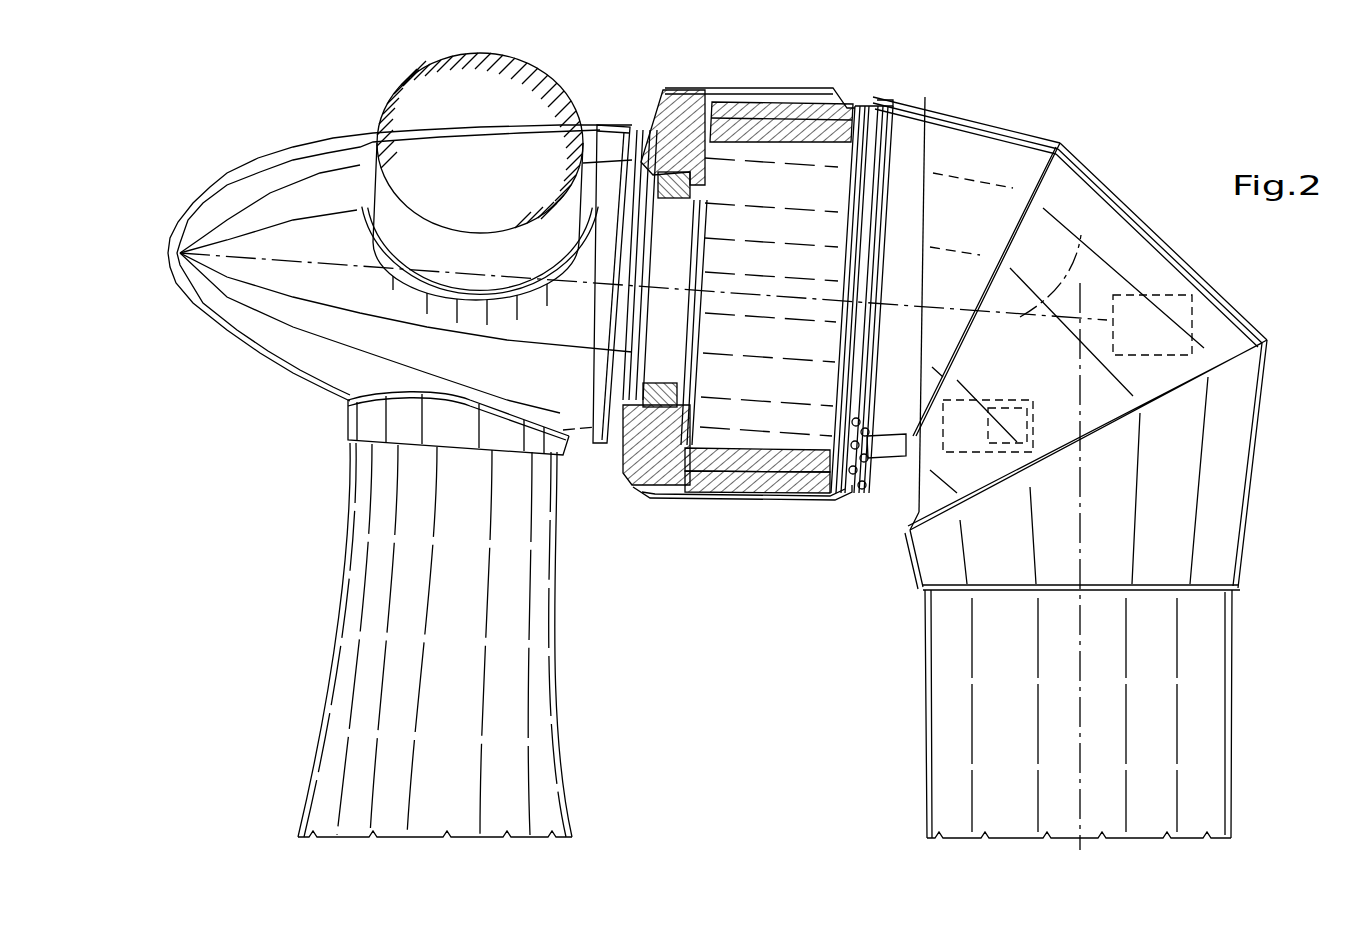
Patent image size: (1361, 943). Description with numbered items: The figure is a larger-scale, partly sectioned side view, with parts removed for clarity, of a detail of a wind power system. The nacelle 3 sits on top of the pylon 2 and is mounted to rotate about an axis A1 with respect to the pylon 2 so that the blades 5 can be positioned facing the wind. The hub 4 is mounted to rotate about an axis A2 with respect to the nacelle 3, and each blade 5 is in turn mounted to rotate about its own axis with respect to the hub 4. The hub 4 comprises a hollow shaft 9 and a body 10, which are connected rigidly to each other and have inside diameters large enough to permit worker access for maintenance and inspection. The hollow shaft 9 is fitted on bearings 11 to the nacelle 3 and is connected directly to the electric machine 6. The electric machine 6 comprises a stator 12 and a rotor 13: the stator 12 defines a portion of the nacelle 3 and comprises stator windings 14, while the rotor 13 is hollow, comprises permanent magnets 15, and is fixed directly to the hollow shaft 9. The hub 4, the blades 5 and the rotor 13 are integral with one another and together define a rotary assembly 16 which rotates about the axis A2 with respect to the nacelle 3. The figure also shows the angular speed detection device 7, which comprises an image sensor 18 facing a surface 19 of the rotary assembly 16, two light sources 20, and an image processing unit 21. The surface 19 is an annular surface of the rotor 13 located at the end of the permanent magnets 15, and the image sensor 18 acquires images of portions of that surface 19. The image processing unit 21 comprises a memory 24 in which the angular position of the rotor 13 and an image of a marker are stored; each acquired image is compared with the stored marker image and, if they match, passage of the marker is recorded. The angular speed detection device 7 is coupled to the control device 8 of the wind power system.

The pylon 2 is at (1148, 748).
The nacelle 3 is at (1165, 168).
The hub 4 is at (638, 114).
The blade 5 is at (574, 110).
The electric machine 6 is at (697, 130).
The angular speed detection device 7 is at (962, 230).
The control device 8 is at (1163, 292).
The hollow shaft 9 is at (658, 350).
The body 10 is at (281, 318).
The bearings 11 is at (680, 172).
The stator 12 is at (702, 490).
The rotor 13 is at (757, 468).
The stator windings 14 is at (727, 484).
The permanent magnets 15 is at (797, 473).
The rotary assembly 16 is at (792, 268).
The image sensor 18 is at (870, 503).
The surface 19 is at (874, 436).
The light sources 20 is at (858, 420).
The image processing unit 21 is at (977, 460).
The memory 24 is at (1003, 445).
The axis A1 is at (1083, 673).
The axis A2 is at (1061, 261).